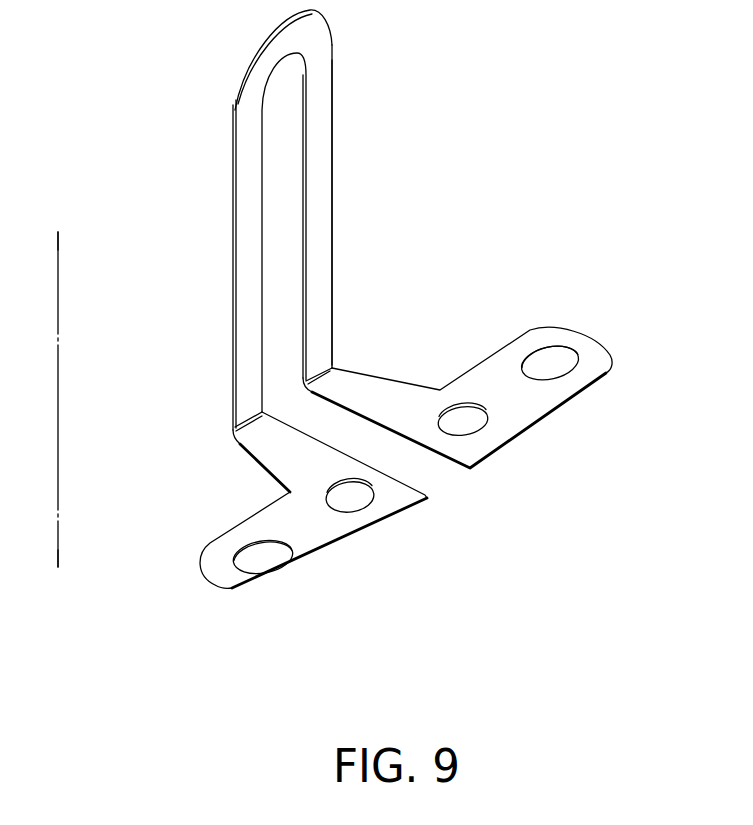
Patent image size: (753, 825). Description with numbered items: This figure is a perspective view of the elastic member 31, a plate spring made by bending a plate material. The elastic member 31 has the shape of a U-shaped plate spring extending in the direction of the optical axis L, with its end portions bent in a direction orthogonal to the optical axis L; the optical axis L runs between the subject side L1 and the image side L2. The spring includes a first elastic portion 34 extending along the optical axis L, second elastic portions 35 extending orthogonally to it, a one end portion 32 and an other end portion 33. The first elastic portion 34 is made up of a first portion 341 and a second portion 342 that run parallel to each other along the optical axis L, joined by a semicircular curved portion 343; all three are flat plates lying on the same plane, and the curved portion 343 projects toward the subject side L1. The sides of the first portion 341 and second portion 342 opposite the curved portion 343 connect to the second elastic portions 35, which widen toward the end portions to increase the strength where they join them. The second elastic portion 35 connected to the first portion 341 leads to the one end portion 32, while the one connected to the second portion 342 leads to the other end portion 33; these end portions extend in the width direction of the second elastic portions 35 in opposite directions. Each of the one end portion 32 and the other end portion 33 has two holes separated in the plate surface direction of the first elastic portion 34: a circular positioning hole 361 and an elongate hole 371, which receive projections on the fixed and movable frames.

The elastic member 31 is at (158, 118).
The one end portion 32 is at (537, 424).
The other end portion 33 is at (342, 553).
The first elastic portion 34 is at (425, 93).
The second elastic portion 35 is at (373, 388).
The first portion 341 is at (333, 163).
The second portion 342 is at (262, 245).
The curved portion 343 is at (322, 15).
The positioning hole 361 is at (373, 490).
The elongate hole 371 is at (575, 352).
The optical axis L is at (60, 340).
The subject side L1 is at (59, 224).
The image side L2 is at (59, 575).